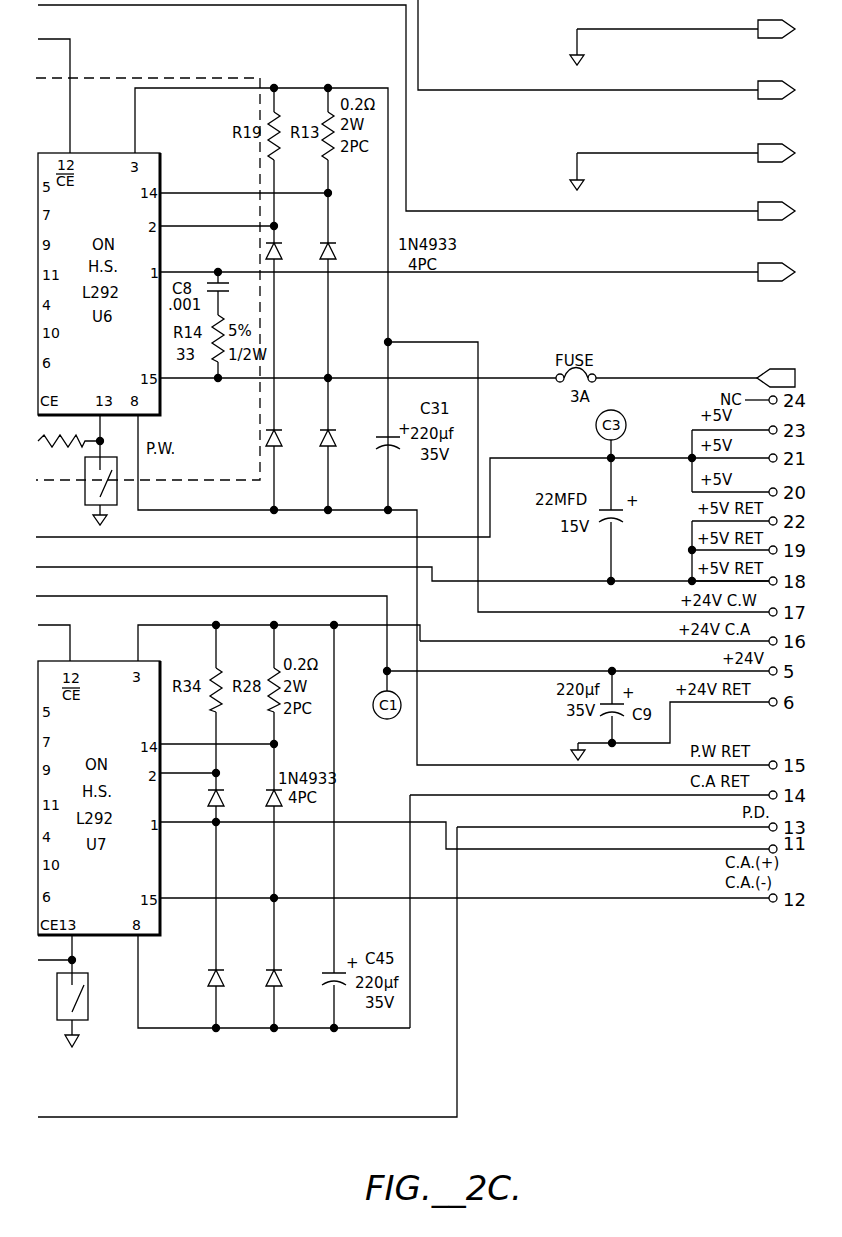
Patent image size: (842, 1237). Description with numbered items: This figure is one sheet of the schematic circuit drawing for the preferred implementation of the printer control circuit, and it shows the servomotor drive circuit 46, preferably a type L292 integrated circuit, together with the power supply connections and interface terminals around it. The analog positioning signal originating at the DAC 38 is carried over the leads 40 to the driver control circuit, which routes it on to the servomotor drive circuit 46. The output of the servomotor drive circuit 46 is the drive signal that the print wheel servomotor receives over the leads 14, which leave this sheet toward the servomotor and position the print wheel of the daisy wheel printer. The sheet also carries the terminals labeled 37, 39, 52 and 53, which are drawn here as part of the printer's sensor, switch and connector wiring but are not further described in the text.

The leads 14 is at (623, 378).
The paper out sensor lead 37 is at (682, 161).
The DAC 38 is at (690, 207).
The cover open switch lead 39 is at (682, 36).
The leads 40 is at (687, 85).
The servomotor drive circuit 46 is at (183, 76).
The carriage motor on switch 52 is at (79, 991).
The print wheel motor on switch 53 is at (83, 470).